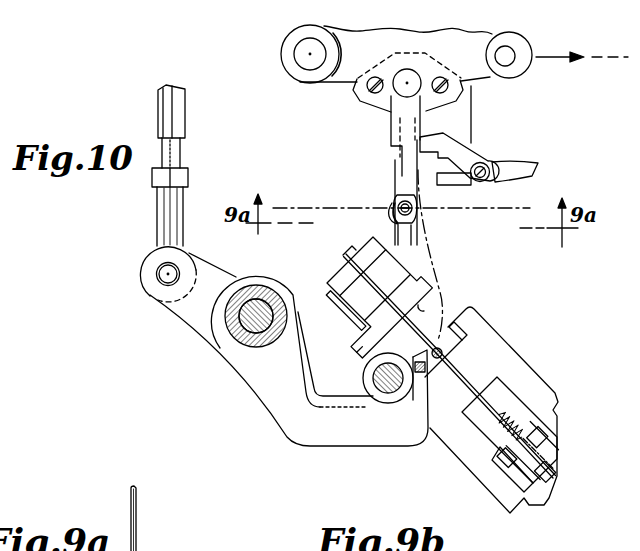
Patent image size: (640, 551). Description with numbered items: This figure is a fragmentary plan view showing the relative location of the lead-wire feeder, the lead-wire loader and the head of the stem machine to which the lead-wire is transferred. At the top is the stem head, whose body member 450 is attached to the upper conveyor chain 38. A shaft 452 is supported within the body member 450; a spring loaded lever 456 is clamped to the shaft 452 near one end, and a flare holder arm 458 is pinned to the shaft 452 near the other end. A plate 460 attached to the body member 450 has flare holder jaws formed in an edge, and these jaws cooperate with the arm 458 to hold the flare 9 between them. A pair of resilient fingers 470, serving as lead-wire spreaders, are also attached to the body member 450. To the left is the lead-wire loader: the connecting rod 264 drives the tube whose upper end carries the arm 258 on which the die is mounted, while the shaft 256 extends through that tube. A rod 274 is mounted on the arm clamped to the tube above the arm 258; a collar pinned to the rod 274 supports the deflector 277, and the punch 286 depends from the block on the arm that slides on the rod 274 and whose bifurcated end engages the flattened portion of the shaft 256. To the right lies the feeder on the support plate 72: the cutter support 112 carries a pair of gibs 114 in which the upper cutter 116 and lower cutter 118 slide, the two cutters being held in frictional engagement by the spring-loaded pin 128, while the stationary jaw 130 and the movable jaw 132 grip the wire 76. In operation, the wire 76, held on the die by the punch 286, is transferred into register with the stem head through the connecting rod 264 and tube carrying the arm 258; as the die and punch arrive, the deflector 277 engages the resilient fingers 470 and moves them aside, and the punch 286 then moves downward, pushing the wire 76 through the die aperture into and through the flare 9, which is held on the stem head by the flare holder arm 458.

The upper conveyor chain 38 is at (519, 78).
The body member 450 is at (455, 118).
The spring loaded lever 456 is at (435, 150).
The shaft 452 is at (482, 182).
The resilient fingers 470 is at (407, 184).
The plate 460 is at (422, 183).
The flare 9 is at (400, 201).
The flare holder arm 458 is at (400, 226).
The wire 76 is at (518, 204).
The connecting rod 264 is at (173, 117).
The arm 258 is at (332, 437).
The shaft 256 is at (250, 330).
The rod 274 is at (383, 393).
The stationary jaw 130 is at (345, 275).
The movable jaw 132 is at (360, 258).
The spring-loaded pin 128 is at (528, 427).
The punch 286 is at (444, 350).
The deflector 277 is at (477, 315).
The support plate 72 is at (525, 377).
The gibs 114 is at (525, 420).
The upper cutter 116 is at (548, 453).
The cutter support 112 is at (553, 490).
The lower cutter 118 is at (507, 459).